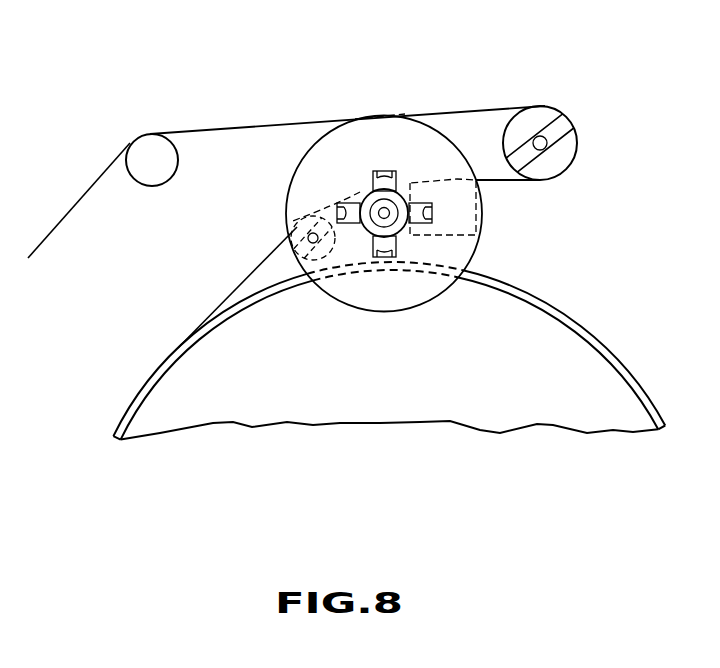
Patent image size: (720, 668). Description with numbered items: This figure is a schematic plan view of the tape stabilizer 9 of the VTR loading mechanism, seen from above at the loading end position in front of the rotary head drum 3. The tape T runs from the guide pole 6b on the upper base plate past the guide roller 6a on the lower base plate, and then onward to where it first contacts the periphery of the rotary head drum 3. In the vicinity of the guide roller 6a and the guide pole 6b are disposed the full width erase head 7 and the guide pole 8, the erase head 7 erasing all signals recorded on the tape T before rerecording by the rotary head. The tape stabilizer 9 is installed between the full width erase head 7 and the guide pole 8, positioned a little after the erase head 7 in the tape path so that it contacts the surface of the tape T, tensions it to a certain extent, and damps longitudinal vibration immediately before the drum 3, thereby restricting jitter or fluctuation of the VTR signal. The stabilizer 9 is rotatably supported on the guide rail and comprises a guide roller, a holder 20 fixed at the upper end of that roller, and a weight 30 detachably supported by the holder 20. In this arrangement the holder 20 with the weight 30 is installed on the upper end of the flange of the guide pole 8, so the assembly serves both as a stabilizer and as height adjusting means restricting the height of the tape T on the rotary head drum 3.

The tape T is at (289, 122).
The guide pole 6b is at (144, 150).
The guide roller 6a is at (544, 117).
The tape stabilizer 9 is at (367, 138).
The weight 30 is at (453, 139).
The holder 20 is at (403, 233).
The guide pole 8 is at (289, 231).
The full width erase head 7 is at (466, 196).
The rotary head drum 3 is at (612, 360).